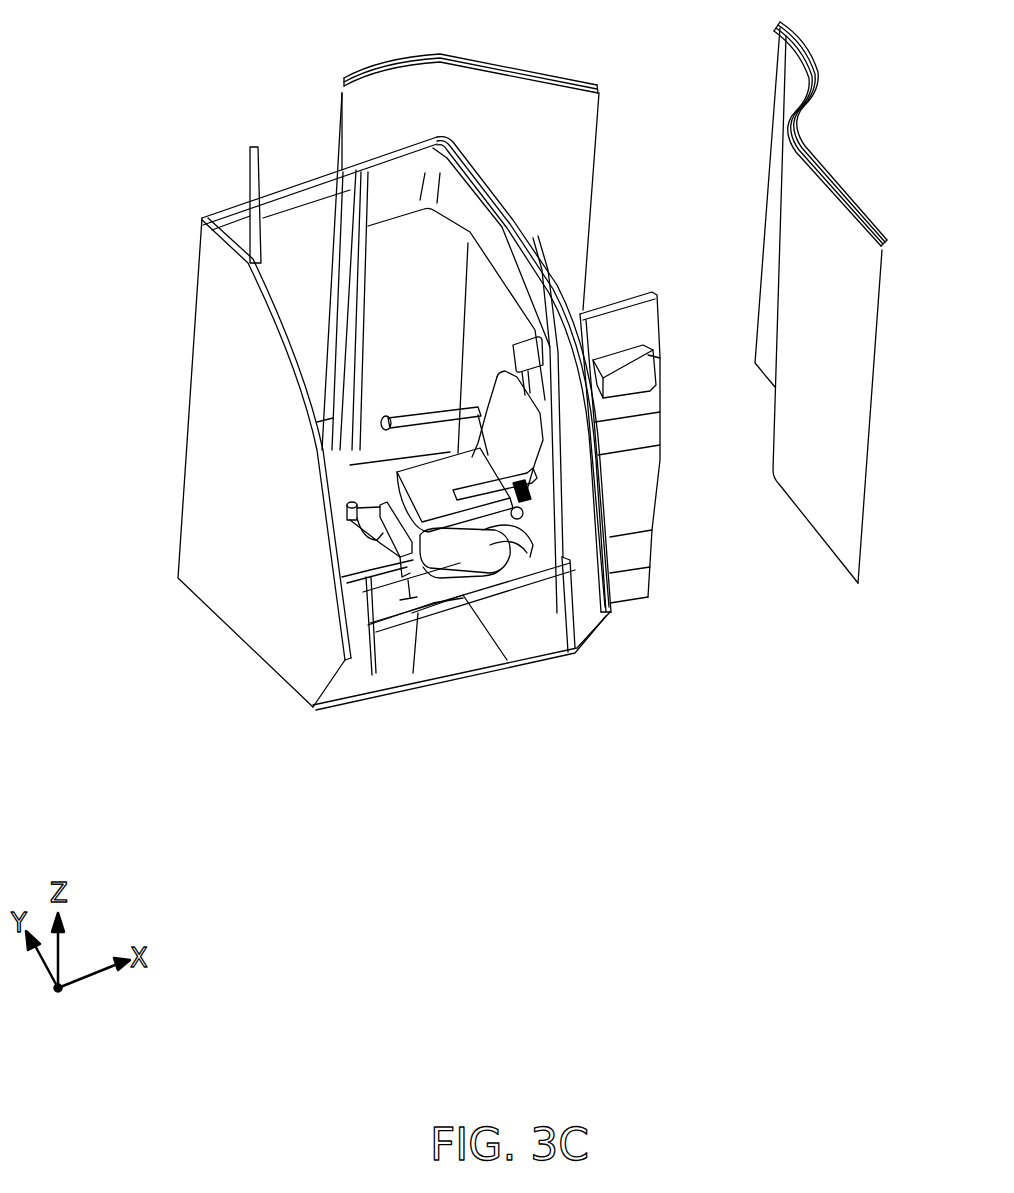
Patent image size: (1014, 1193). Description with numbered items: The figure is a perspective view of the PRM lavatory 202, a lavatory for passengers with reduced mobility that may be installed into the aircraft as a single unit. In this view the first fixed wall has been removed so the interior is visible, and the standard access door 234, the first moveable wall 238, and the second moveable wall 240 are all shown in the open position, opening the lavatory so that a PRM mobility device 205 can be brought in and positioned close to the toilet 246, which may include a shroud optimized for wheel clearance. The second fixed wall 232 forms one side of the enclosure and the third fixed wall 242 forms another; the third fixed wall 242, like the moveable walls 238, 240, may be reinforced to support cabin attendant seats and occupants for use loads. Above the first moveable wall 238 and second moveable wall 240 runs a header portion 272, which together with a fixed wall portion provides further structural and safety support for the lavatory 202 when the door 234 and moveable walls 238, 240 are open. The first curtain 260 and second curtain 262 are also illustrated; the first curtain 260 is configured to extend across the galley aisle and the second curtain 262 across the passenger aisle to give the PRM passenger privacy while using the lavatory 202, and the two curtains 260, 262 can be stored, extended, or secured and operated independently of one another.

The PRM lavatory 202 is at (146, 242).
The PRM mobility device 205 is at (525, 492).
The second fixed wall 232 is at (247, 613).
The standard access door 234 is at (249, 173).
The first moveable wall 238 is at (398, 237).
The second moveable wall 240 is at (643, 323).
The third fixed wall 242 is at (595, 608).
The toilet 246 is at (458, 565).
The first curtain 260 is at (585, 127).
The second curtain 262 is at (858, 465).
The header portion 272 is at (411, 180).